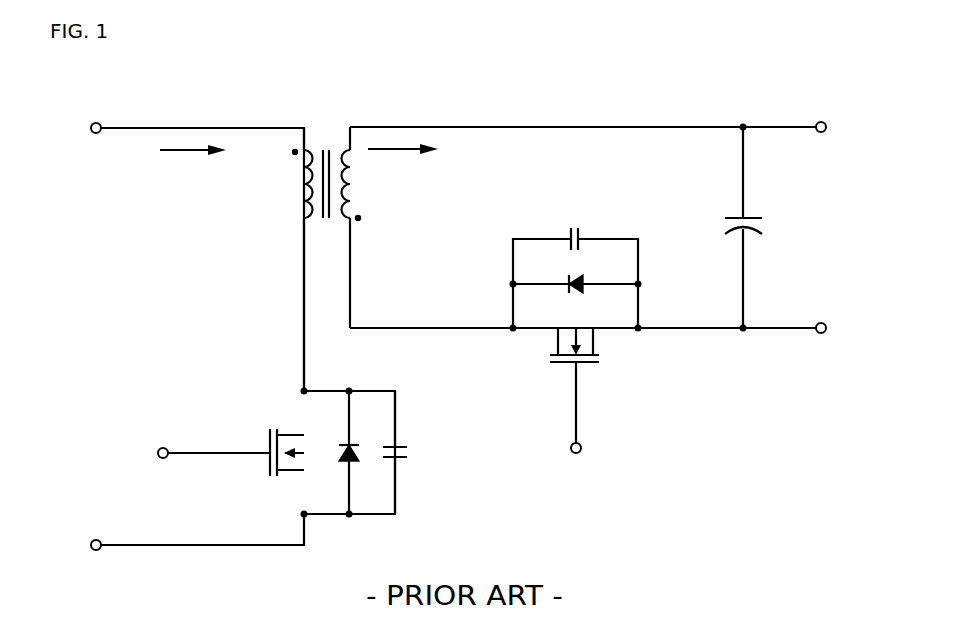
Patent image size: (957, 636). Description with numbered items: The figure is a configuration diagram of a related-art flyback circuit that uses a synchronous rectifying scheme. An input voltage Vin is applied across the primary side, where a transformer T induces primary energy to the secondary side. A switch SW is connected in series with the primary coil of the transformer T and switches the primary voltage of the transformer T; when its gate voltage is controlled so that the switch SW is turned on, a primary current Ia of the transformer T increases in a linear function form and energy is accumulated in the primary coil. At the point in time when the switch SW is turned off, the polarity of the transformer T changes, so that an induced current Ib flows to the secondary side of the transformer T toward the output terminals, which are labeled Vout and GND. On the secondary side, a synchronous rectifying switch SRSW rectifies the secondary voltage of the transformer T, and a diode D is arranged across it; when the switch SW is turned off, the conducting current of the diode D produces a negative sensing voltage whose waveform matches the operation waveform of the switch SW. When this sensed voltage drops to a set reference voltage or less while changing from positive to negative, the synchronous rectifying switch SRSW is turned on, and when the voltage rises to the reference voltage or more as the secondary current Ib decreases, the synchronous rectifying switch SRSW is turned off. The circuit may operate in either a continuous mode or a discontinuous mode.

The transformer T is at (326, 253).
The primary current Ia is at (205, 151).
The induced current Ib is at (415, 151).
The input voltage Vin is at (166, 335).
The output voltage Vout is at (616, 128).
The ground GND is at (616, 329).
The diode D is at (576, 280).
The synchronous rectifying switch SRSW is at (598, 342).
The switch SW is at (296, 432).